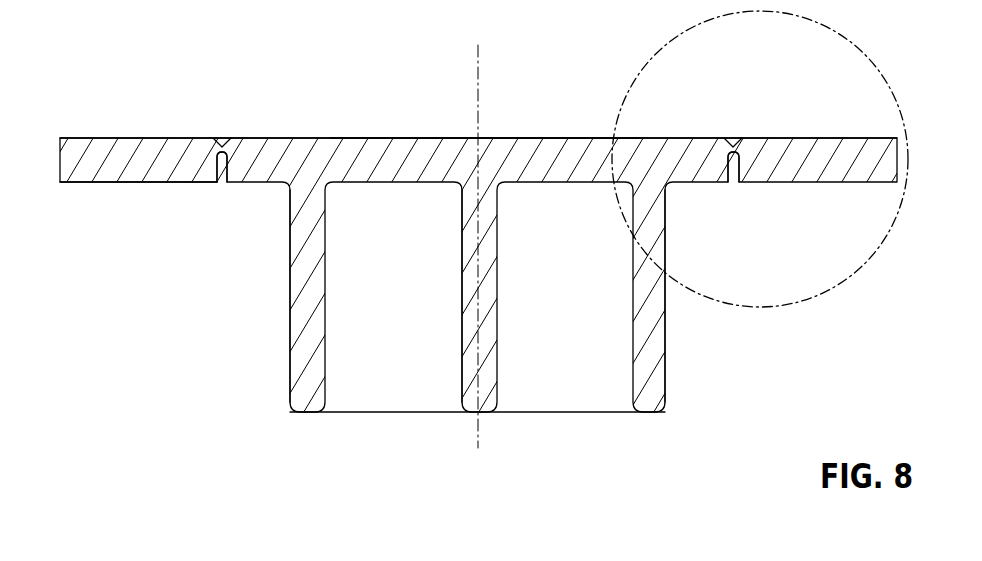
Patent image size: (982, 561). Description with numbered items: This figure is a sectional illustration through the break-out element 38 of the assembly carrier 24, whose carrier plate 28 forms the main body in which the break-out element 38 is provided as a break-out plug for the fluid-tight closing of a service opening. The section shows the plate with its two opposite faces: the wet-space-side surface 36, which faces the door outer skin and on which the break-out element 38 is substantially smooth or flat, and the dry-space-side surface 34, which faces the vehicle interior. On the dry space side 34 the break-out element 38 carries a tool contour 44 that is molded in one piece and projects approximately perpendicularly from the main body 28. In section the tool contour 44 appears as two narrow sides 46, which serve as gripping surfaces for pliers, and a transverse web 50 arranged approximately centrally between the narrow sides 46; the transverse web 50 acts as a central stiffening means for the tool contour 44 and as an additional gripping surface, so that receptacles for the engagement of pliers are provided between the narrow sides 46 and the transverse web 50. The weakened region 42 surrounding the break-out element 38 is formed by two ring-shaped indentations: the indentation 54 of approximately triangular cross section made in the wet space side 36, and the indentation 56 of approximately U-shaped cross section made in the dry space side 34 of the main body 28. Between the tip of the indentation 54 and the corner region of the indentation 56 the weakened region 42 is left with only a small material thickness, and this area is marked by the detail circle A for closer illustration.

The assembly carrier 24 is at (108, 138).
The carrier plate 28 is at (491, 228).
The wet-space-side surface 36 is at (163, 138).
The dry-space-side surface 34 is at (102, 182).
The break-out element 38 is at (521, 123).
The indentation 54 is at (217, 138).
The weakened region 42 is at (232, 138).
The indentation 56 is at (222, 183).
The narrow sides 46 is at (300, 312).
The tool contour 44 is at (424, 414).
The transverse web 50 is at (487, 403).
The detail region A is at (877, 252).